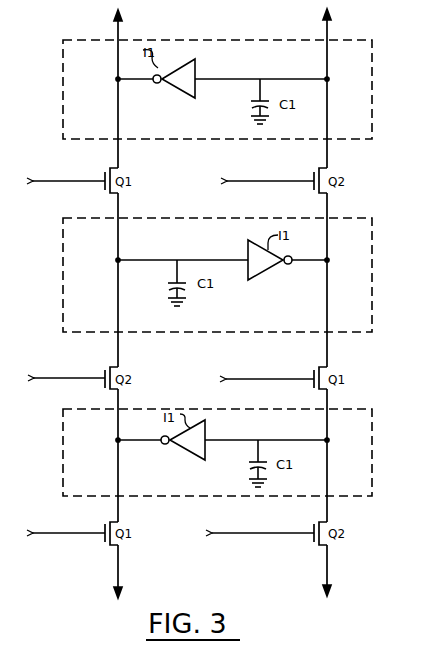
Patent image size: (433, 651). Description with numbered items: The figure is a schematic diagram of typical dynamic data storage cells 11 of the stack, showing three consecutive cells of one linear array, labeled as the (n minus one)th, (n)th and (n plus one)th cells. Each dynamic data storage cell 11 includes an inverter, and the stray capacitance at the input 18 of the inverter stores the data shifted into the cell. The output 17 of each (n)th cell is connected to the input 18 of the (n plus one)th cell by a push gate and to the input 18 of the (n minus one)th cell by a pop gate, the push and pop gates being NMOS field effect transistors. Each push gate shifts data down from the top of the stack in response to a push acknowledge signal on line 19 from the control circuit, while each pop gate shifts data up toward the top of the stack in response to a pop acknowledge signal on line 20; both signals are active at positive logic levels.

The dynamic data storage cell 11 is at (375, 64).
The output 17 is at (118, 79).
The input 18 is at (327, 79).
The push acknowledge line 19 is at (83, 181).
The pop acknowledge line 20 is at (279, 181).